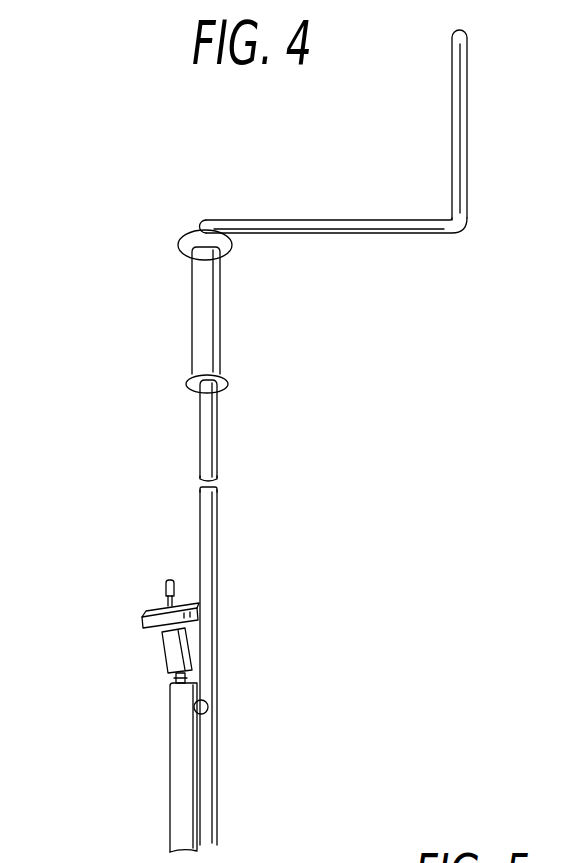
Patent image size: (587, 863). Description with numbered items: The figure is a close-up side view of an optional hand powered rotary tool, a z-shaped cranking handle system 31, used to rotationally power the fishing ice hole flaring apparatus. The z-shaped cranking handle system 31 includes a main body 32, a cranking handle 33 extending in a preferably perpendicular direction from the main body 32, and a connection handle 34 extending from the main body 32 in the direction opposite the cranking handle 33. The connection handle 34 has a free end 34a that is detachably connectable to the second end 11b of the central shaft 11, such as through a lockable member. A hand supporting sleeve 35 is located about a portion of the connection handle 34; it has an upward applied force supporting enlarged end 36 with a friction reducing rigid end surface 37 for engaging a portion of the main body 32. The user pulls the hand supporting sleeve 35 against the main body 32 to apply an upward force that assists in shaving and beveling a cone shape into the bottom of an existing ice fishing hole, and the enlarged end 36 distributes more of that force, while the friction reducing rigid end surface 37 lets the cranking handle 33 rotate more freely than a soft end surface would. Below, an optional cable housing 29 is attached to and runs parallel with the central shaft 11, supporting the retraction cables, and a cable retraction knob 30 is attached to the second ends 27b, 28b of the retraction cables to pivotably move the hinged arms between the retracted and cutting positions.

The z-shaped cranking handle system 31 is at (96, 172).
The main body 32 is at (267, 220).
The cranking handle 33 is at (467, 153).
The friction reducing rigid end surface 37 is at (192, 237).
The upward applied force supporting enlarged end 36 is at (178, 250).
The hand supporting sleeve 35 is at (222, 332).
The connection handle 34 is at (200, 422).
The free end 34a is at (218, 479).
The central shaft 11 is at (217, 676).
The second end 11b is at (218, 488).
The second end 27b is at (111, 567).
The second end 28b is at (166, 599).
The cable retraction knob 30 is at (153, 627).
The cable housing 29 is at (170, 778).